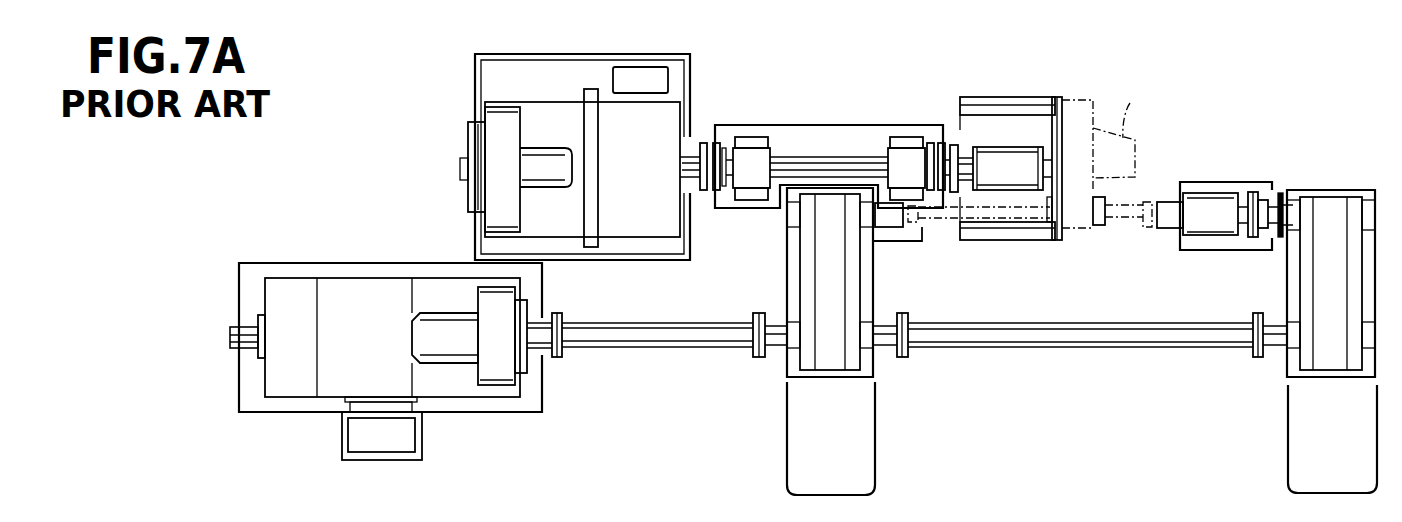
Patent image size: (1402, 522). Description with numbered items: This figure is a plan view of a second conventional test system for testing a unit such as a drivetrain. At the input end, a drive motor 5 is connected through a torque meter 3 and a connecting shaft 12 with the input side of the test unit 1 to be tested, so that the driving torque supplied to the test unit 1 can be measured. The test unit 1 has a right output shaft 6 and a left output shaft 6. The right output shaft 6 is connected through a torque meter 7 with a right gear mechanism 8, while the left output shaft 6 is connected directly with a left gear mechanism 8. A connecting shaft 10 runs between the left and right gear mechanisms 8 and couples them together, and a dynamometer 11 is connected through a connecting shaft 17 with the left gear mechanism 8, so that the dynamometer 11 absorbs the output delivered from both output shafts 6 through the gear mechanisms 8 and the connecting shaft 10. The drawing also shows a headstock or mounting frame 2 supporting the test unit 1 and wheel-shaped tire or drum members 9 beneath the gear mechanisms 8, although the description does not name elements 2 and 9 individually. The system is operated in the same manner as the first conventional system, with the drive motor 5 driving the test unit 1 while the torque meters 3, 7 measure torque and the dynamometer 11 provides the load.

The test unit 1 is at (1130, 103).
The headstock frame 2 is at (1028, 97).
The torque meter 3 is at (993, 160).
The drive motor 5 is at (660, 127).
The output shaft 6 is at (948, 220).
The torque meter 7 is at (1210, 207).
The gear mechanism 8 is at (827, 260).
The tire 9 is at (787, 427).
The connecting shaft 10 is at (1070, 350).
The dynamometer 11 is at (363, 298).
The connecting shaft 12 is at (850, 167).
The connecting shaft 17 is at (635, 337).